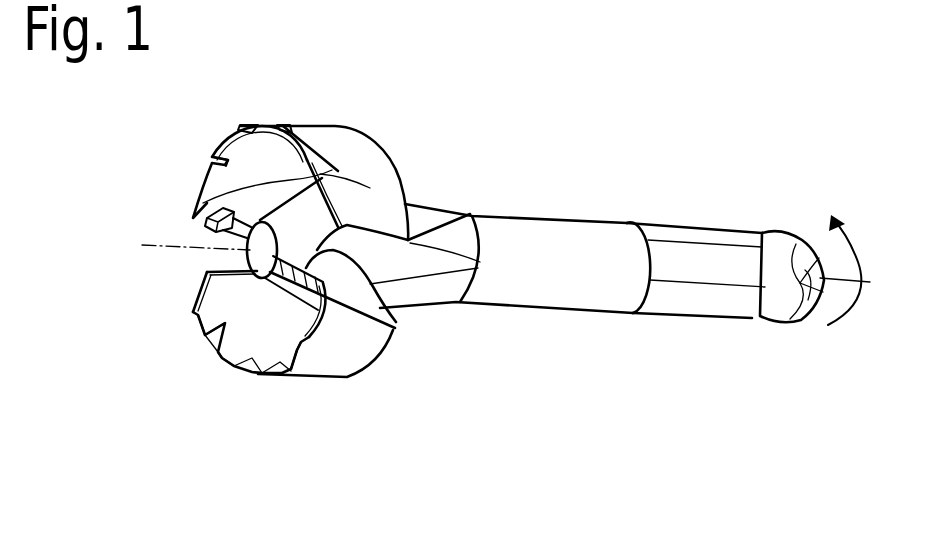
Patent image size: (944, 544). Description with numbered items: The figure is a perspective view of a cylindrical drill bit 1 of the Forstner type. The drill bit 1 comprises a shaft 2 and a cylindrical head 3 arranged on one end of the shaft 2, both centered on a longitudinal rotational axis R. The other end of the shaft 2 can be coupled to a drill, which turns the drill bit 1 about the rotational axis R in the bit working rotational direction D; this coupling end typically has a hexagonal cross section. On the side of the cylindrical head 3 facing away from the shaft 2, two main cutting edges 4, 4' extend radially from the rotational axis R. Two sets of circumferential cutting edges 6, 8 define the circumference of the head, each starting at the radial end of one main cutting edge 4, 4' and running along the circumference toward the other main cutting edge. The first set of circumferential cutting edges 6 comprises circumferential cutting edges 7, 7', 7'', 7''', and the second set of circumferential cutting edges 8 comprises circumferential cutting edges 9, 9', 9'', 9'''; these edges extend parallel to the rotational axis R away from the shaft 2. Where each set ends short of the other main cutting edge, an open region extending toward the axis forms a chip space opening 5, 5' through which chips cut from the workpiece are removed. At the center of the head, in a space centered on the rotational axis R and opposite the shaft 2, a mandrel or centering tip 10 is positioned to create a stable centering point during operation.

The drill bit 1 is at (550, 185).
The shaft 2 is at (615, 222).
The cylindrical head 3 is at (354, 118).
The main cutting edge 4 is at (195, 220).
The main cutting edge 4' is at (381, 297).
The chip space opening 5 is at (228, 288).
The chip space opening 5' is at (395, 250).
The first set of circumferential cutting edges 6 is at (206, 124).
The circumferential cutting edge 7 is at (197, 155).
The circumferential cutting edge 7' is at (239, 105).
The circumferential cutting edge 7'' is at (298, 102).
The circumferential cutting edge 7''' is at (395, 167).
The second set of circumferential cutting edges 8 is at (237, 390).
The circumferential cutting edge 9 is at (190, 346).
The circumferential cutting edge 9' is at (214, 388).
The circumferential cutting edge 9'' is at (267, 405).
The circumferential cutting edge 9''' is at (320, 385).
The centering tip 10 is at (247, 250).
The rotational axis R is at (140, 245).
The bit working rotational direction D is at (849, 281).